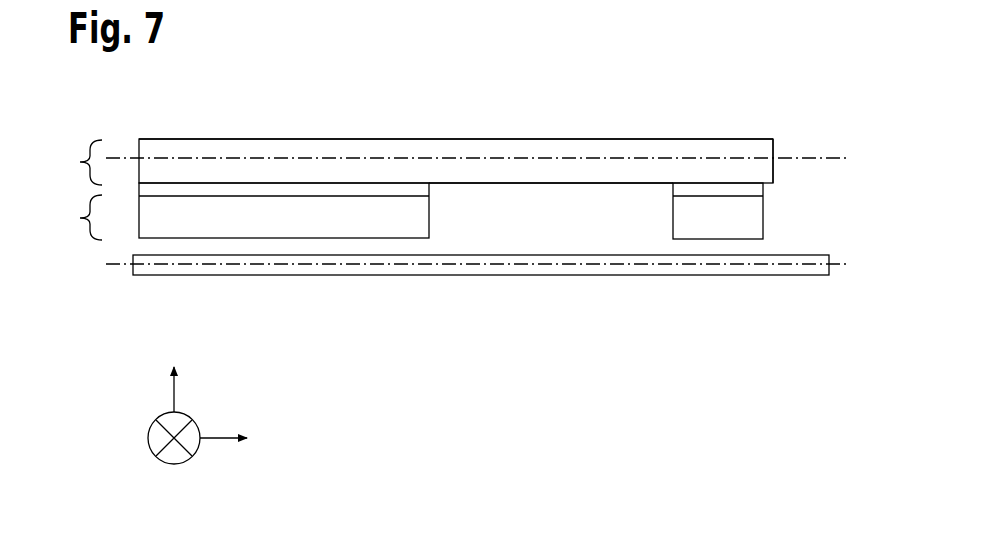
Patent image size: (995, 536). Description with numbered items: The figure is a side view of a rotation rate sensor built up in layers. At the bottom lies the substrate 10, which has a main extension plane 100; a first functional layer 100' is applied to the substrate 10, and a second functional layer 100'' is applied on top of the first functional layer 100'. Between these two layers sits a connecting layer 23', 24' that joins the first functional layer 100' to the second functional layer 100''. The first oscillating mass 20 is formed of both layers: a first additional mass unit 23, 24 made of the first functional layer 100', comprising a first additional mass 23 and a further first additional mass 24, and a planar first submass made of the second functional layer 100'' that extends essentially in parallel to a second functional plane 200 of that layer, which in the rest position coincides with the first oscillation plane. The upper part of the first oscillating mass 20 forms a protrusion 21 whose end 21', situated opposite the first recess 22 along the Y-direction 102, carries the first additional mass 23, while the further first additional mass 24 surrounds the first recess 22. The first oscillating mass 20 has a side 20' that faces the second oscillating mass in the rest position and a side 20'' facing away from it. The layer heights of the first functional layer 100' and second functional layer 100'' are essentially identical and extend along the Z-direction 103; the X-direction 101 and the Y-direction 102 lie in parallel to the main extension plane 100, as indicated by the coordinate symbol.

The substrate 10 is at (752, 270).
The first oscillating mass 20 is at (369, 60).
The side facing second oscillating mass 20' is at (575, 283).
The side facing away 20'' is at (551, 122).
The protrusion 21 is at (456, 122).
The end of protrusion 21' is at (815, 179).
The first recess 22 is at (345, 135).
The first additional mass 23 is at (718, 261).
The connecting layer 23' is at (694, 264).
The further first additional mass 24 is at (284, 261).
The connecting layer 24' is at (284, 264).
The main extension plane 100 is at (477, 301).
The first functional layer 100' is at (64, 217).
The second functional layer 100'' is at (437, 162).
The X-direction 101 is at (152, 447).
The Y-direction 102 is at (240, 460).
The Z-direction 103 is at (144, 381).
The second functional plane 200 is at (832, 158).